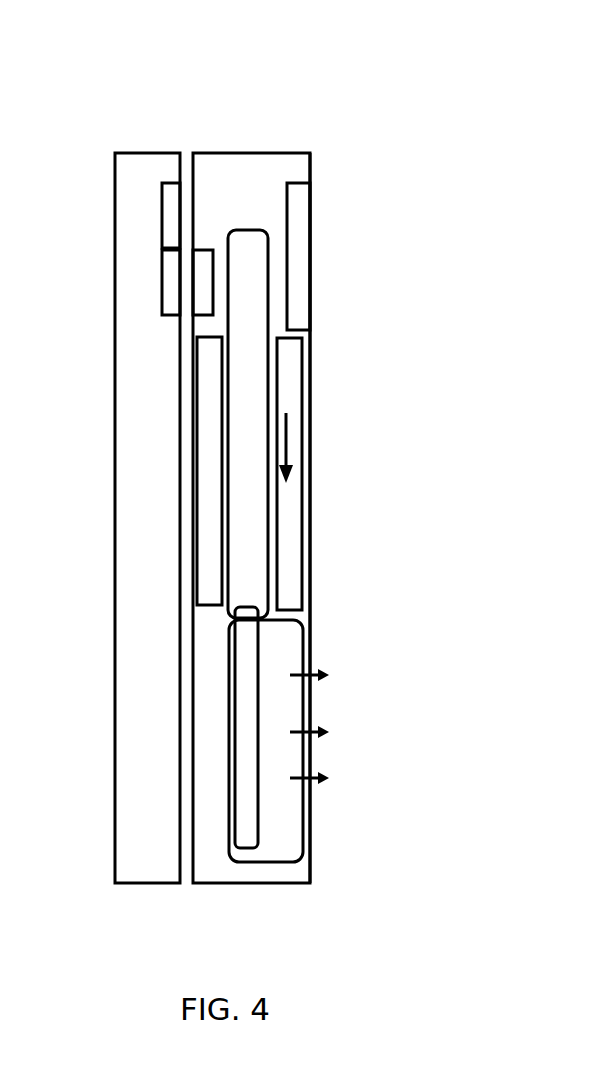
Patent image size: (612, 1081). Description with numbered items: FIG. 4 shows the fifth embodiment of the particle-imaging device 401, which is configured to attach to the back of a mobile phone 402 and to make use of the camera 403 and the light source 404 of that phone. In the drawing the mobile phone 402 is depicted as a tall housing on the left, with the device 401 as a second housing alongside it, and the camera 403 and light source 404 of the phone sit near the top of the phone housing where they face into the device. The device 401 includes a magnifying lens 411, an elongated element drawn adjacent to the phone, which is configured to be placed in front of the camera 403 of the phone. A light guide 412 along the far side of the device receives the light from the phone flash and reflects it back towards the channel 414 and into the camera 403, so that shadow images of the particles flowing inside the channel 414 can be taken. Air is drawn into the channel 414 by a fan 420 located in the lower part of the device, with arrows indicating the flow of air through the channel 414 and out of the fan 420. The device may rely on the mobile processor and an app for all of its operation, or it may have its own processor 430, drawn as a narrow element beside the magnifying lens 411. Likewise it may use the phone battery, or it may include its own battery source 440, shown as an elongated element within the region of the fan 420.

The device 401 is at (287, 146).
The mobile phone 402 is at (177, 146).
The camera 403 is at (205, 277).
The light source 404 is at (193, 200).
The magnifying lens 411 is at (245, 300).
The light guide 412 is at (335, 227).
The channel 414 is at (298, 212).
The fan 420 is at (315, 815).
The processor 430 is at (243, 447).
The battery source 440 is at (243, 710).